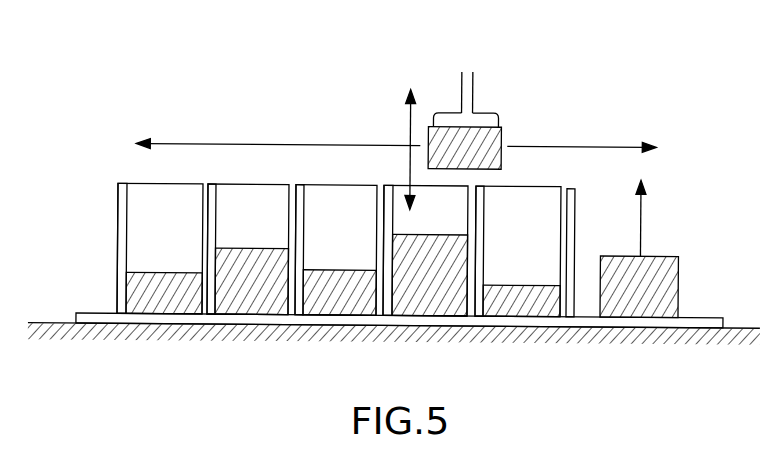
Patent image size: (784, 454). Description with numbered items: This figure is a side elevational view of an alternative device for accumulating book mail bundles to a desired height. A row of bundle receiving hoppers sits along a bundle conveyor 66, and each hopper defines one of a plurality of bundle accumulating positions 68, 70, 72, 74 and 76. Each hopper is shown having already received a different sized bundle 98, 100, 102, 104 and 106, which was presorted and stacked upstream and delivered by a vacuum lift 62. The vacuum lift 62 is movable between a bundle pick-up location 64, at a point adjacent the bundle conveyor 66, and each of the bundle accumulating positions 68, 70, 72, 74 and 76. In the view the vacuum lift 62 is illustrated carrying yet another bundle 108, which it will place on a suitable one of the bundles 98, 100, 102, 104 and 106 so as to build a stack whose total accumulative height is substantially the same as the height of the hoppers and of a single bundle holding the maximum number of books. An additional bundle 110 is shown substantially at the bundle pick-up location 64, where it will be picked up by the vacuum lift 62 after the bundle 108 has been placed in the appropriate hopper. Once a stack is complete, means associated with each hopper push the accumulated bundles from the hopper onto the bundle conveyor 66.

The vacuum lift 62 is at (470, 79).
The bundle pick-up location 64 is at (633, 329).
The bundle conveyor 66 is at (60, 334).
The bundle accumulating position 68 is at (480, 215).
The bundle accumulating position 70 is at (392, 208).
The bundle accumulating position 72 is at (304, 208).
The bundle accumulating position 74 is at (216, 208).
The bundle accumulating position 76 is at (126, 206).
The bundle 98 is at (508, 285).
The bundle 100 is at (407, 265).
The bundle 102 is at (333, 283).
The bundle 104 is at (247, 280).
The bundle 106 is at (150, 278).
The bundle 108 is at (498, 132).
The bundle 110 is at (655, 262).